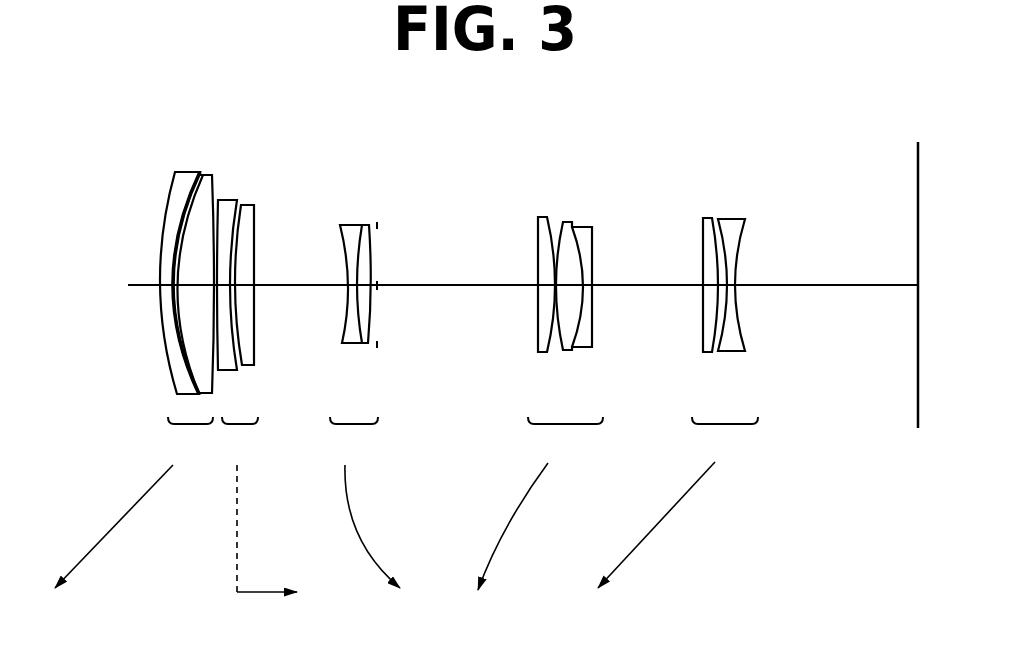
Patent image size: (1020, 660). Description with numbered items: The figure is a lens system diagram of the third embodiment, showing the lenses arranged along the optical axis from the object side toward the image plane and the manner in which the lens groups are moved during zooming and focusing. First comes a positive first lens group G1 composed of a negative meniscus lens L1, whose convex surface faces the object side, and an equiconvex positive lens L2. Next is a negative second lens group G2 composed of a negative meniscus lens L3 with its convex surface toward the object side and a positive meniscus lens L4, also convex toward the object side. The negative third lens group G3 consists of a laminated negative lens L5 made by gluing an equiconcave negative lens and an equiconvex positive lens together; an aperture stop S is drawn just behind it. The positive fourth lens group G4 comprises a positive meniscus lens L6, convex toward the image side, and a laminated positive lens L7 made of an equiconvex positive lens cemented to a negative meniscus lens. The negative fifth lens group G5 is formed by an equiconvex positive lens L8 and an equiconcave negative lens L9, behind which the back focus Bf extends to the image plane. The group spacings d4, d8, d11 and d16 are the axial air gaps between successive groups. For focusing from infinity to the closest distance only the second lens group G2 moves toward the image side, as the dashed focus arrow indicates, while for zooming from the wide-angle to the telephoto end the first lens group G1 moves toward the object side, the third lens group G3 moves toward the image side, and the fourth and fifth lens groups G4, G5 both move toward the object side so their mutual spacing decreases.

The negative meniscus lens L1 is at (187, 183).
The equiconvex positive lens L2 is at (205, 175).
The negative meniscus lens L3 is at (230, 200).
The positive meniscus lens L4 is at (247, 205).
The laminated negative lens L5 is at (363, 224).
The aperture stop S is at (380, 226).
The positive meniscus lens L6 is at (542, 217).
The laminated positive lens L7 is at (587, 227).
The equiconvex positive lens L8 is at (708, 218).
The equiconcave negative lens L9 is at (737, 218).
The lens surface spacing d4 is at (215, 286).
The lens surface spacing d8 is at (302, 286).
The lens surface spacing d11 is at (482, 285).
The lens surface spacing d16 is at (650, 286).
The back focus Bf is at (835, 288).
The first lens group G1 is at (135, 502).
The second lens group G2 is at (270, 520).
The third lens group G3 is at (365, 502).
The fourth lens group G4 is at (540, 503).
The fifth lens group G5 is at (678, 502).